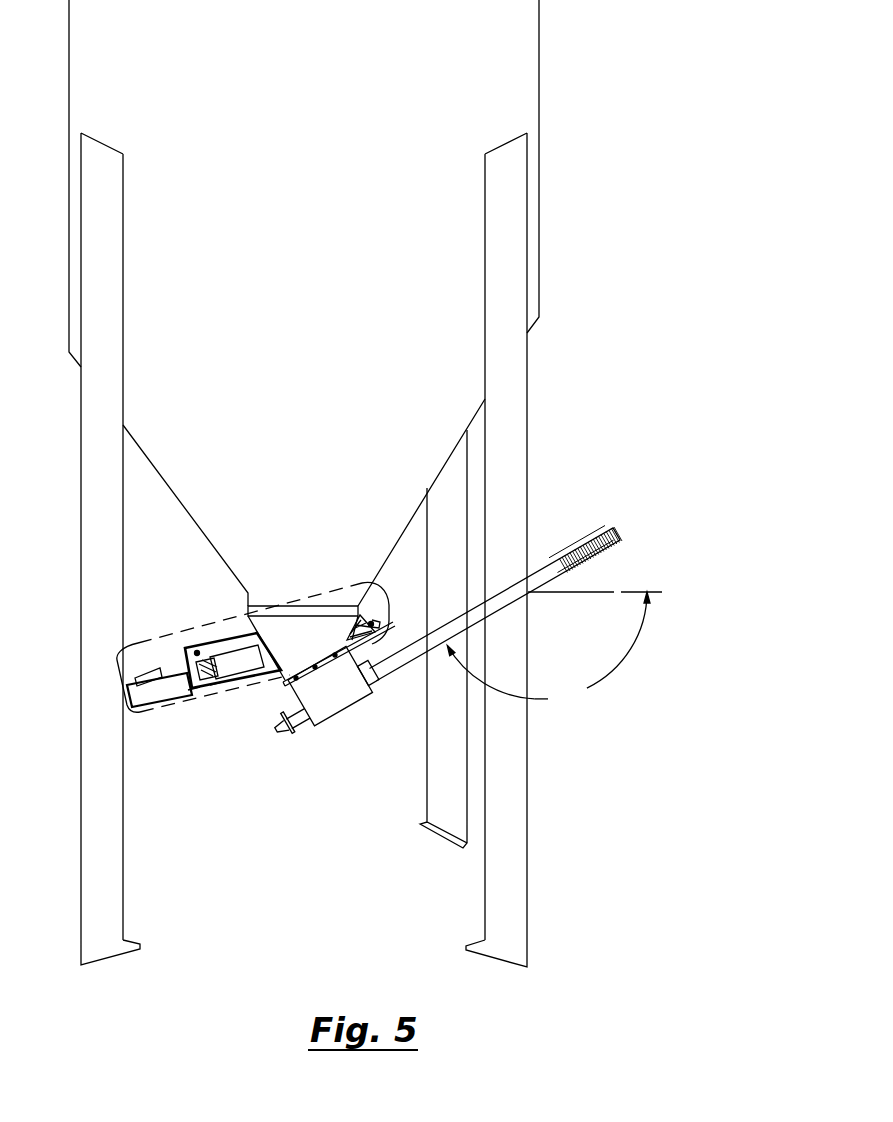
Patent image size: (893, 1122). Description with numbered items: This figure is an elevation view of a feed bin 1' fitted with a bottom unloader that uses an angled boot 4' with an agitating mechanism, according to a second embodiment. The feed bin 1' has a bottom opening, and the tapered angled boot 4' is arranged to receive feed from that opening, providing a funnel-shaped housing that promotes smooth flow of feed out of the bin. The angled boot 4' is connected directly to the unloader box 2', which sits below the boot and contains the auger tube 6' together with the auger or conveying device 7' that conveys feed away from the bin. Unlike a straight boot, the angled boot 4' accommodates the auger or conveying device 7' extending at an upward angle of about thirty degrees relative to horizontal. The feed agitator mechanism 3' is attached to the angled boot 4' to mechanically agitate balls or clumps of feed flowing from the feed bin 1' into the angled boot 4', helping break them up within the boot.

The feed bin 1' is at (395, 483).
The unloader box 2' is at (312, 733).
The feed agitator mechanism 3' is at (253, 679).
The angled boot 4' is at (334, 632).
The auger tube 6' is at (472, 654).
The auger or conveying device 7' is at (617, 519).